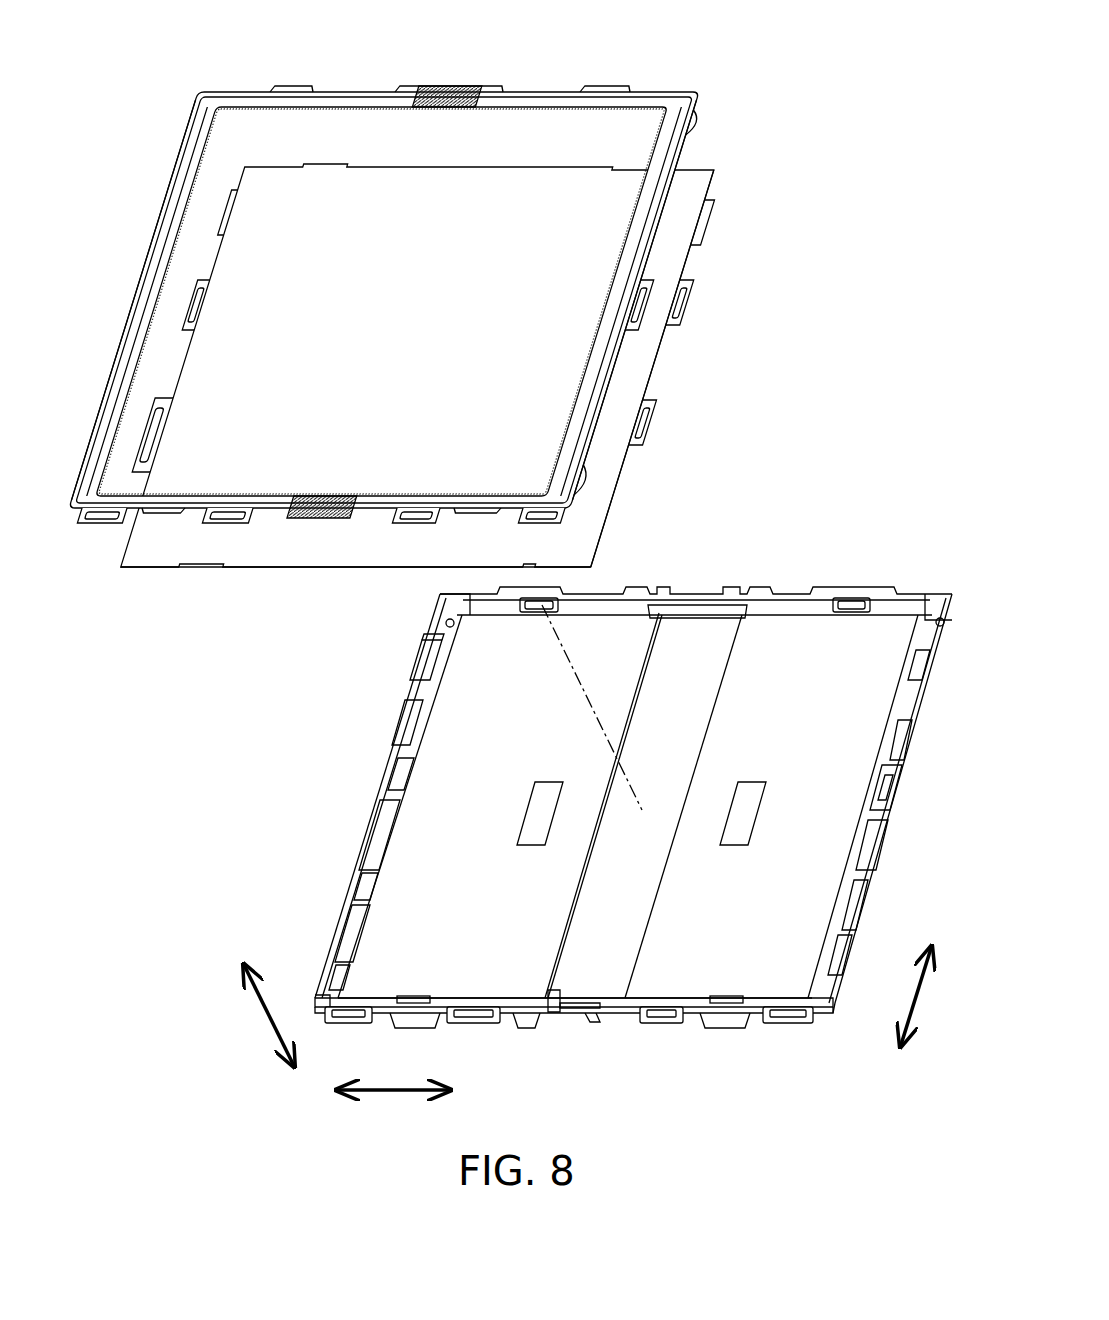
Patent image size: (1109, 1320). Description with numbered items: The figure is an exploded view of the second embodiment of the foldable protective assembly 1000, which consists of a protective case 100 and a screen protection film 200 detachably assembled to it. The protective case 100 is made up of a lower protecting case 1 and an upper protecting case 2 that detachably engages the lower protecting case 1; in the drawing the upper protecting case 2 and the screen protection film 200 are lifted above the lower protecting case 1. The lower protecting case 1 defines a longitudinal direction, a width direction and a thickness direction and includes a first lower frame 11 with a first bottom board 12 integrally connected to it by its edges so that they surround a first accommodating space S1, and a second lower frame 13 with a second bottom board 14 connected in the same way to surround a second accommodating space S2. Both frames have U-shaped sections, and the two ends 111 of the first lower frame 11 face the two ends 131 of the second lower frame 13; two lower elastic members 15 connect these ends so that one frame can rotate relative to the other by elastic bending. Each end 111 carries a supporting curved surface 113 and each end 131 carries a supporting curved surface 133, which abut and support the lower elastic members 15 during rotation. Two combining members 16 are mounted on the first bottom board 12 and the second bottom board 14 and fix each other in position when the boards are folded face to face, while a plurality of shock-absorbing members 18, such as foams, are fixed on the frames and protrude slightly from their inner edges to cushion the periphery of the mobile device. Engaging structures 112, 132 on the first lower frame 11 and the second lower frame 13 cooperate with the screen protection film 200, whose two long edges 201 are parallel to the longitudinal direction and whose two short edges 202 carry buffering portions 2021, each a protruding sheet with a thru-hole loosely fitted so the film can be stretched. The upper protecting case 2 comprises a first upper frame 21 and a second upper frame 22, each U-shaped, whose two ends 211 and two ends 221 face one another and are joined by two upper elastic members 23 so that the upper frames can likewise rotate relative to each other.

The foldable protective assembly 1000 is at (955, 8).
The protective case 100 is at (945, 83).
The lower protecting case 1 is at (607, 810).
The upper protecting case 2 is at (419, 264).
The first lower frame 11 is at (345, 915).
The first bottom board 12 is at (430, 822).
The second lower frame 13 is at (905, 785).
The second bottom board 14 is at (808, 640).
The lower elastic member 15 is at (700, 600).
The combining member 16 is at (548, 783).
The shock-absorbing member 18 is at (440, 660).
The first upper frame 21 is at (178, 158).
The second upper frame 22 is at (690, 150).
The upper elastic member 23 is at (445, 86).
The end of first lower frame 111 is at (530, 1020).
The engaging structure 112 is at (365, 863).
The supporting curved surface 113 is at (557, 1010).
The end of second lower frame 131 is at (605, 1022).
The engaging structure 132 is at (855, 870).
The supporting curved surface 133 is at (588, 1022).
The screen protection film 200 is at (448, 408).
The long edge 201 is at (293, 572).
The short edge 202 is at (660, 368).
The buffering portion 2021 is at (640, 437).
The end of first upper frame 211 is at (376, 90).
The end of second upper frame 221 is at (517, 95).
The first accommodating space S1 is at (455, 712).
The second accommodating space S2 is at (875, 712).